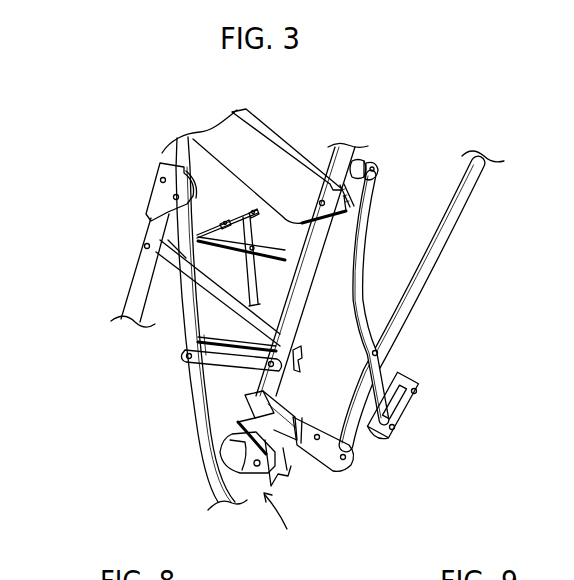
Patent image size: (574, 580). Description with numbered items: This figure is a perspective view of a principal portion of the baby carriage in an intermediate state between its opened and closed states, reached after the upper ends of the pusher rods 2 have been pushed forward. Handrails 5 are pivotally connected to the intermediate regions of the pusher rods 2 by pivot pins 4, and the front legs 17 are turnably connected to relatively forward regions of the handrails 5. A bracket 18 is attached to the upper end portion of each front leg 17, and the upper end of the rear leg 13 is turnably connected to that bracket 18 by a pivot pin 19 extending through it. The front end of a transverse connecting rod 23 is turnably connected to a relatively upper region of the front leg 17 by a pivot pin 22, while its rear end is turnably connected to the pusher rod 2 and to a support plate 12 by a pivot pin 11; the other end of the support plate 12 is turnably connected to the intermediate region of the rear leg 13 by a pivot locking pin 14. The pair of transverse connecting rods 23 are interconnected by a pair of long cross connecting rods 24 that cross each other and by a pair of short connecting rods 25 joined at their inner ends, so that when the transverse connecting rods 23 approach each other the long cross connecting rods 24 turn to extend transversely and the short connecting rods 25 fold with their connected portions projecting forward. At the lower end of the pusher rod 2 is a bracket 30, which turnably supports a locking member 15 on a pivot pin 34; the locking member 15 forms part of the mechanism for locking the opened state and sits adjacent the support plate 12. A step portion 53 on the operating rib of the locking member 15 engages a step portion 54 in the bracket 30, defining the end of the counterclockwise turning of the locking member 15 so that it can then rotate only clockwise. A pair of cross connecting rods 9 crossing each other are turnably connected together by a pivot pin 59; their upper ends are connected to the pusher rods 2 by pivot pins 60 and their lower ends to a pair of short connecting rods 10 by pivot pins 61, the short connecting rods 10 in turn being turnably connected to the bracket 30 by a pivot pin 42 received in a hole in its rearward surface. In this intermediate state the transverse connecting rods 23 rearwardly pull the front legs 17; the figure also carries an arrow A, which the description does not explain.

The pusher rod 2 is at (319, 263).
The pivot pin 4 is at (326, 203).
The handrail 5 is at (262, 148).
The cross connecting rod 9 is at (357, 304).
The short connecting rod 10 is at (405, 413).
The pivot pin 11 is at (296, 352).
The support plate 12 is at (203, 368).
The rear leg 13 is at (198, 425).
The pivot locking pin 14 is at (183, 358).
The locking member 15 is at (224, 458).
The front leg 17 is at (130, 293).
The bracket 18 is at (158, 184).
The pivot pin 19 is at (173, 198).
The pivot pin 22 is at (145, 246).
The transverse connecting rod 23 is at (227, 313).
The long cross connecting rod 24 is at (284, 228).
The short connecting rod 25 is at (236, 220).
The bracket 30 is at (285, 410).
The pivot pin 34 is at (257, 466).
The pivot pin 42 is at (317, 442).
The step portion 53 is at (228, 442).
The step portion 54 is at (248, 446).
The pivot pin 59 is at (379, 353).
The pivot pin 60 is at (378, 168).
The pivot pin 61 is at (346, 459).
The direction arrow A is at (283, 522).